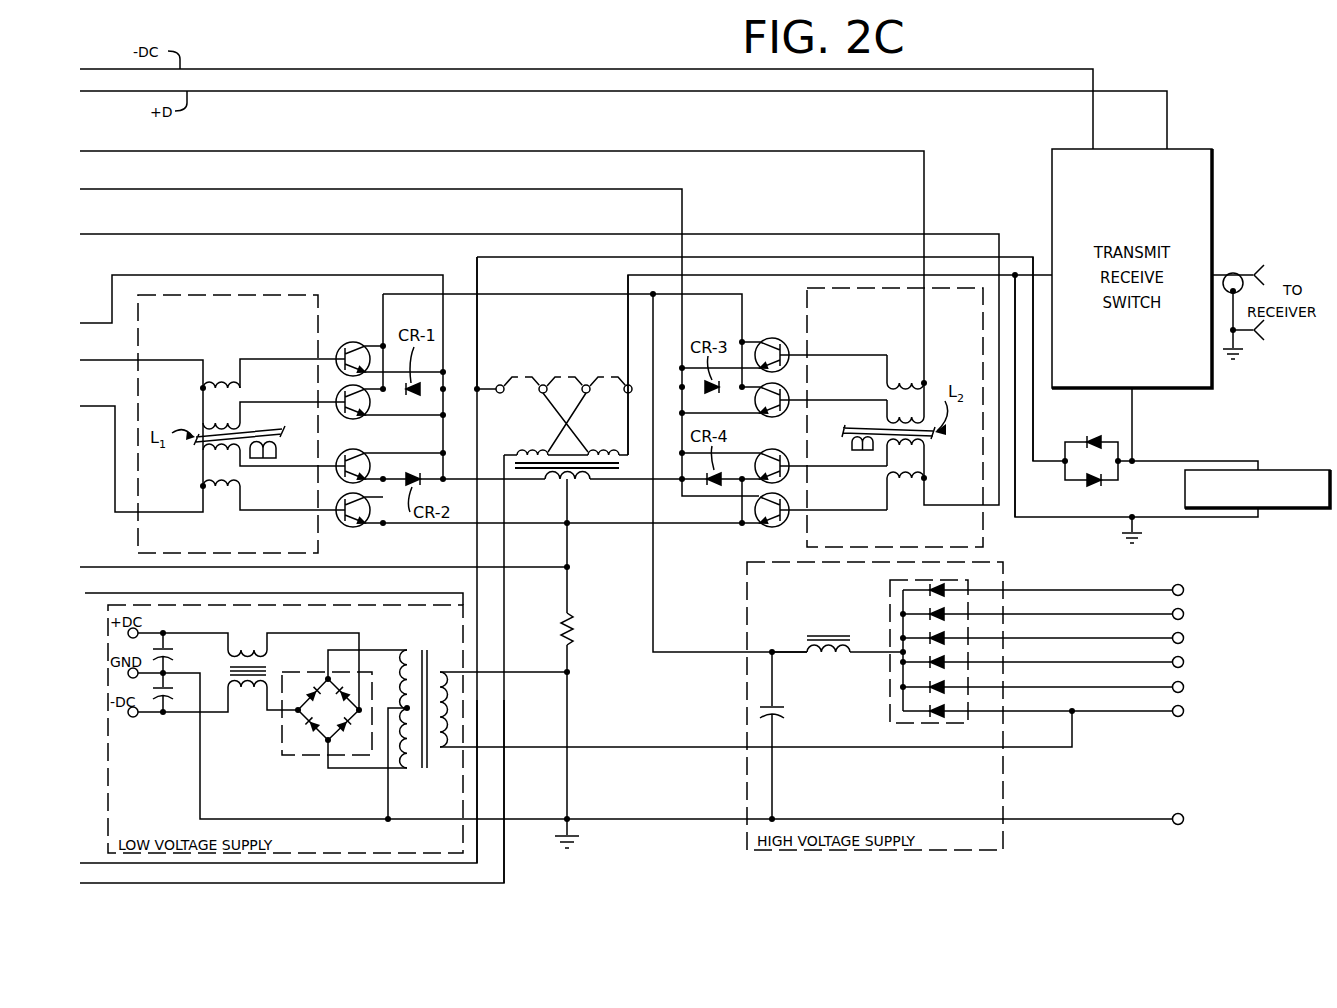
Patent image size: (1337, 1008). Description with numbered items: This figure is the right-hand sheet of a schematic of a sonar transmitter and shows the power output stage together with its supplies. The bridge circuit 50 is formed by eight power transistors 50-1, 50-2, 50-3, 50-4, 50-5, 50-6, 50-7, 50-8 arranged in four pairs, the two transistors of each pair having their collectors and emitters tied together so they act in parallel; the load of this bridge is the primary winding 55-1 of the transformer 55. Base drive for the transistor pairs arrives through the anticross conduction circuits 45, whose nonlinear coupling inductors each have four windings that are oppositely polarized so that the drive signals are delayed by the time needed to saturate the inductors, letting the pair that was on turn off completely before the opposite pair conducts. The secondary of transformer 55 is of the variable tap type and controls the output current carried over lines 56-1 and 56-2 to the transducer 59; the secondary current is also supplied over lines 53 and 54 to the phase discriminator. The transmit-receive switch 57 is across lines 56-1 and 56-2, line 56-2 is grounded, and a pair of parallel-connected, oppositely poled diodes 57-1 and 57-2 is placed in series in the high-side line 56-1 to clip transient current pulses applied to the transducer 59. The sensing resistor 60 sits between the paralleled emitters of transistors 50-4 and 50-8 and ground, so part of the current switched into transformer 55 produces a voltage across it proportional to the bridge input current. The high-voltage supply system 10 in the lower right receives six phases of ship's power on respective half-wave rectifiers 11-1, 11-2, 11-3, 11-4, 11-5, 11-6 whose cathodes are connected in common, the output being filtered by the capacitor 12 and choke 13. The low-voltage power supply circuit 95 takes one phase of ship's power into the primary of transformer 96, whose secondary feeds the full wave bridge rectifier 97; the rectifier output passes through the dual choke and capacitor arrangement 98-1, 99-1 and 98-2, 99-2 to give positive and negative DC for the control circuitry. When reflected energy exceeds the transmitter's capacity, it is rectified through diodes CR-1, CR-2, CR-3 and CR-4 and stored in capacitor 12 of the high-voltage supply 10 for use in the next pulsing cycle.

The high-voltage supply system 10 is at (1013, 783).
The half-wave rectifier 11-1 is at (925, 589).
The half-wave rectifier 11-2 is at (923, 616).
The half-wave rectifier 11-3 is at (924, 640).
The half-wave rectifier 11-4 is at (922, 662).
The half-wave rectifier 11-5 is at (922, 687).
The half-wave rectifier 11-6 is at (921, 718).
The capacitor 12 is at (758, 708).
The choke 13 is at (827, 661).
The anticross conduction circuit 45 is at (130, 341).
The bridge circuit 50 is at (356, 301).
The power transistor 50-1 is at (337, 351).
The power transistor 50-2 is at (337, 393).
The power transistor 50-3 is at (360, 452).
The power transistor 50-4 is at (355, 528).
The power transistor 50-5 is at (786, 345).
The power transistor 50-6 is at (788, 387).
The power transistor 50-7 is at (788, 478).
The power transistor 50-8 is at (776, 528).
The line 53 is at (477, 786).
The line 54 is at (505, 792).
The transformer 55 is at (632, 463).
The primary winding 55-1 is at (567, 485).
The line 56-1 is at (477, 320).
The line 56-2 is at (628, 352).
The transmit-receive switch 57 is at (1213, 179).
The diode 57-1 is at (1094, 432).
The diode 57-2 is at (1100, 486).
The transducer 59 is at (1300, 468).
The sensing resistor 60 is at (577, 632).
The low-voltage power supply circuit 95 is at (100, 793).
The transformer 96 is at (435, 658).
The full wave bridge rectifier 97 is at (340, 721).
The capacitor 98-1 is at (170, 645).
The capacitor 98-2 is at (170, 714).
The choke 99-1 is at (243, 650).
The choke 99-2 is at (245, 691).
The diode CR-1 is at (413, 389).
The diode CR-2 is at (413, 479).
The diode CR-3 is at (712, 387).
The diode CR-4 is at (714, 479).